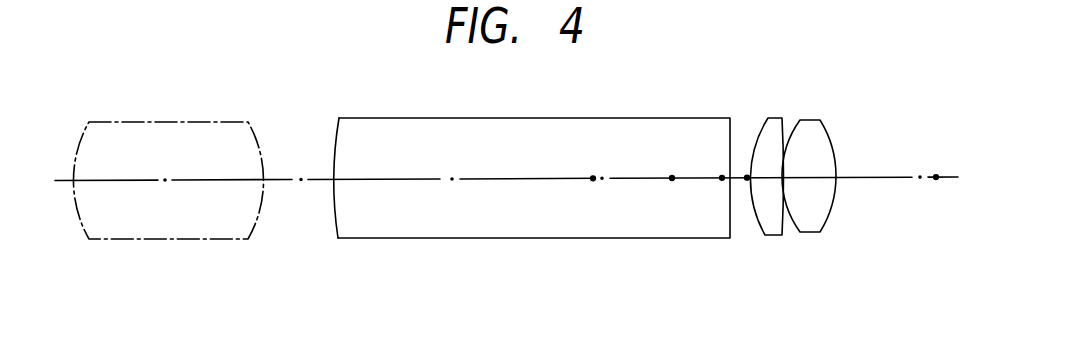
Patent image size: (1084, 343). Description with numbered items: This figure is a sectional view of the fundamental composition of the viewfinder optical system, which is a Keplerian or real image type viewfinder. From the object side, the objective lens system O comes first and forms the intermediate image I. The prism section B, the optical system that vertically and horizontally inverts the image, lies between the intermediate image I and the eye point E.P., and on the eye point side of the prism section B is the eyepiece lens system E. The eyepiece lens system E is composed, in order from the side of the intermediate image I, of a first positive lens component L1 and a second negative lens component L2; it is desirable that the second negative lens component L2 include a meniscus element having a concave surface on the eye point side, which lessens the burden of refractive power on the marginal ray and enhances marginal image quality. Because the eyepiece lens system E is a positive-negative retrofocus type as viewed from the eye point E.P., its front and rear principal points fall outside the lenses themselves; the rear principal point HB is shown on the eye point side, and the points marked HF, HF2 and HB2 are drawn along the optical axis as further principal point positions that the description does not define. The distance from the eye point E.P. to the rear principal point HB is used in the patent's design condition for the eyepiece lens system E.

The objective lens system O is at (258, 265).
The intermediate image I is at (333, 181).
The prism section B is at (528, 225).
The front principal point of block B HF is at (581, 197).
The rear principal point HB is at (662, 162).
The front principal point of eyepiece HF2 is at (707, 196).
The rear principal point of eyepiece HB2 is at (747, 177).
The eyepiece lens system E is at (794, 174).
The first positive lens component L1 is at (772, 228).
The second negative lens component L2 is at (812, 225).
The eye point E.P. is at (941, 194).